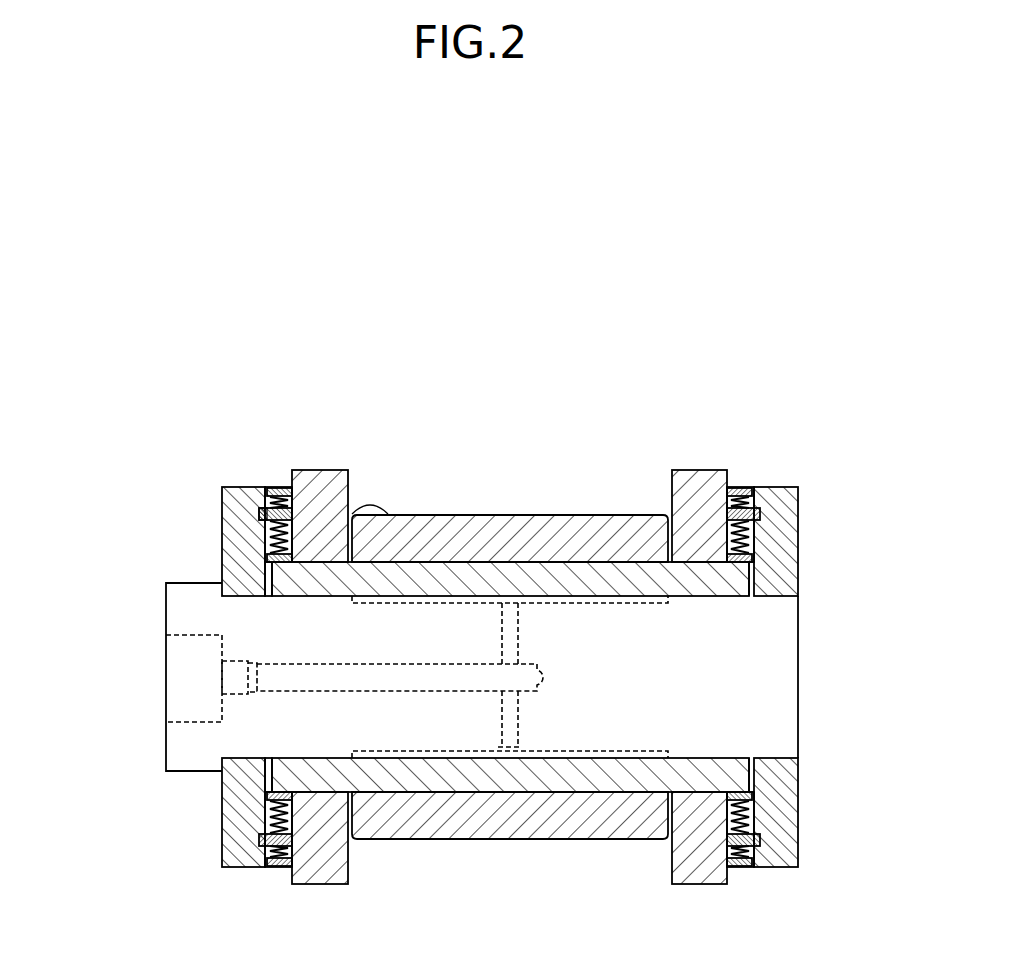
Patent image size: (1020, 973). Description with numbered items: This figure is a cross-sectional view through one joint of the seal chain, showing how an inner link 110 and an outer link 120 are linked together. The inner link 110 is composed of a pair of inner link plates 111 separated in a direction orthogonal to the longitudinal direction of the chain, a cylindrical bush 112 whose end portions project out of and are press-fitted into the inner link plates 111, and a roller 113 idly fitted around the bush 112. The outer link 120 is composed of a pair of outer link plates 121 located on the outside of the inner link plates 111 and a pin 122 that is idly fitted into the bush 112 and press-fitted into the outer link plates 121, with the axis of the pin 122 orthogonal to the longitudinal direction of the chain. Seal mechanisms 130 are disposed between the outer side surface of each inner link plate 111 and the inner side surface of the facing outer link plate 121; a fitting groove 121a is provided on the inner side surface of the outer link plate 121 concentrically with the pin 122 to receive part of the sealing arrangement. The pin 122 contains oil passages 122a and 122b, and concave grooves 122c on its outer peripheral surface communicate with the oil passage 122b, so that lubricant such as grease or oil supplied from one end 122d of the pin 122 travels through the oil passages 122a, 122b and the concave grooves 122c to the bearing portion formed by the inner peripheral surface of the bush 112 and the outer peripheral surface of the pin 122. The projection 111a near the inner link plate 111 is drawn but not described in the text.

The inner link 110 is at (404, 677).
The inner link plate 111 is at (262, 545).
The projection of flange member 111a is at (268, 488).
The cylindrical bush 112 is at (284, 597).
The roller 113 is at (270, 567).
The outer link 120 is at (471, 683).
The outer link plate 121 is at (788, 571).
The fitting groove 121a is at (340, 561).
The pin 122 is at (441, 742).
The oil passage 122a is at (287, 683).
The oil passage 122b is at (510, 712).
The concave groove 122c is at (458, 753).
The one end of the pin 122d is at (148, 670).
The seal mechanism 130 is at (282, 470).